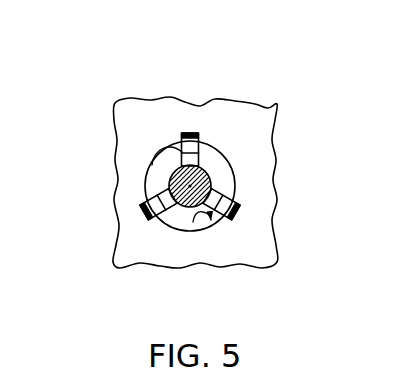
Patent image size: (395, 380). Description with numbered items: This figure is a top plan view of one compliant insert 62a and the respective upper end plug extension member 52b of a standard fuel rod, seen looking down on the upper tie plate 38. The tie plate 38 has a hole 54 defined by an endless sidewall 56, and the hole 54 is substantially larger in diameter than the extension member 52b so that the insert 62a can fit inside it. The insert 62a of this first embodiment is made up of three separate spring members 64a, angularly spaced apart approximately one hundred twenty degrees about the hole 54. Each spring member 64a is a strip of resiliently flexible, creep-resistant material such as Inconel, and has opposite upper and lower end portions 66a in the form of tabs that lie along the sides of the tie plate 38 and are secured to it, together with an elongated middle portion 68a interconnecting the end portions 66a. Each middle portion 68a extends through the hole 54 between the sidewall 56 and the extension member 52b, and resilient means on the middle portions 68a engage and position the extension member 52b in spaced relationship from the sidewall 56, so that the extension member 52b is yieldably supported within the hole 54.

The upper tie plate 38 is at (267, 252).
The compliant insert 62a is at (237, 151).
The extension member 52b is at (190, 207).
The spring member 64a is at (203, 137).
The end portion 66a is at (192, 133).
The middle portion 68a is at (213, 147).
The sidewall 56 is at (153, 163).
The hole 54 is at (193, 222).